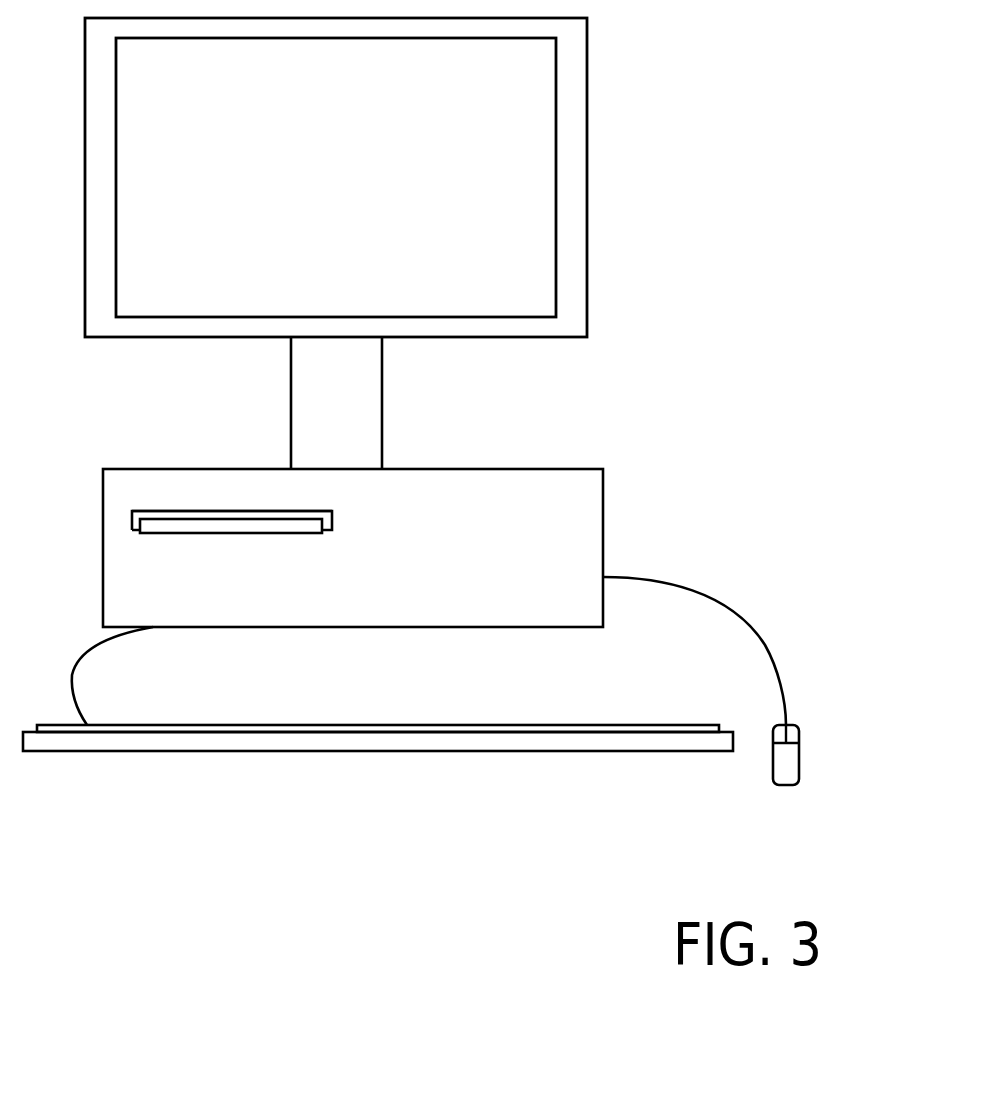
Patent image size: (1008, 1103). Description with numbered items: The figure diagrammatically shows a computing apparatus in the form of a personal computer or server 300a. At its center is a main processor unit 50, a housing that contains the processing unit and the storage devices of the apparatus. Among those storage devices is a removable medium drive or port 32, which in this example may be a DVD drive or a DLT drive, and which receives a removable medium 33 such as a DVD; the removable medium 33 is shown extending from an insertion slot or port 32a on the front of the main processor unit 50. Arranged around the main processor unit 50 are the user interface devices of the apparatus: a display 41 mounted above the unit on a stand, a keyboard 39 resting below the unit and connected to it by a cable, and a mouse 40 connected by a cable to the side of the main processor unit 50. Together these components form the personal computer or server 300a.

The personal computer or server 300a is at (723, 442).
The display 41 is at (587, 130).
The main processor unit 50 is at (570, 467).
The removable medium drive or port 32 is at (178, 511).
The insertion slot or port 32a is at (139, 507).
The removable medium 33 is at (208, 520).
The keyboard 39 is at (545, 730).
The mouse 40 is at (799, 753).